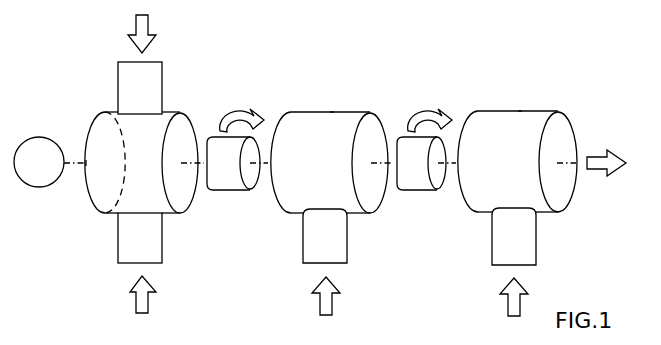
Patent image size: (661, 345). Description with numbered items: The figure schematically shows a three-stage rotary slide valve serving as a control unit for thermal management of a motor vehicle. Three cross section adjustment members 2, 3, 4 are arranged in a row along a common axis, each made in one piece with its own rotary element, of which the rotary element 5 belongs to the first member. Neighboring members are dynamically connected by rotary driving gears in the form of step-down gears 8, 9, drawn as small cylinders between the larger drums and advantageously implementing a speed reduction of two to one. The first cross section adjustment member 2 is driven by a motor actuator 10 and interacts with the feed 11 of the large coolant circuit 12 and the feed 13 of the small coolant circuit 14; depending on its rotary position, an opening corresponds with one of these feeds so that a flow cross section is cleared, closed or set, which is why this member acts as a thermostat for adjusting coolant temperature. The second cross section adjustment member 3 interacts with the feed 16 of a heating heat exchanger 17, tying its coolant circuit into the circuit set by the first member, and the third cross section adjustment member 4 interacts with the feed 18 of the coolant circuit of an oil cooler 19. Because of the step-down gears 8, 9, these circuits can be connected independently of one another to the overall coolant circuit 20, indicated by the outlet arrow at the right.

The first cross section adjustment member 2 is at (100, 193).
The second cross section adjustment member 3 is at (328, 110).
The third cross section adjustment member 4 is at (514, 108).
The rotary element 5 is at (103, 126).
The step-down gear 8 is at (233, 178).
The step-down gear 9 is at (422, 178).
The motor actuator 10 is at (34, 180).
The feed of the large coolant circuit 11 is at (148, 75).
The large coolant circuit 12 is at (150, 27).
The feed of the small coolant circuit 13 is at (152, 237).
The small coolant circuit 14 is at (150, 302).
The feed of the heating heat exchanger 16 is at (340, 237).
The heating heat exchanger 17 is at (336, 305).
The feed of the oil cooler coolant circuit 18 is at (525, 239).
The oil cooler 19 is at (502, 309).
The overall coolant circuit 20 is at (604, 178).